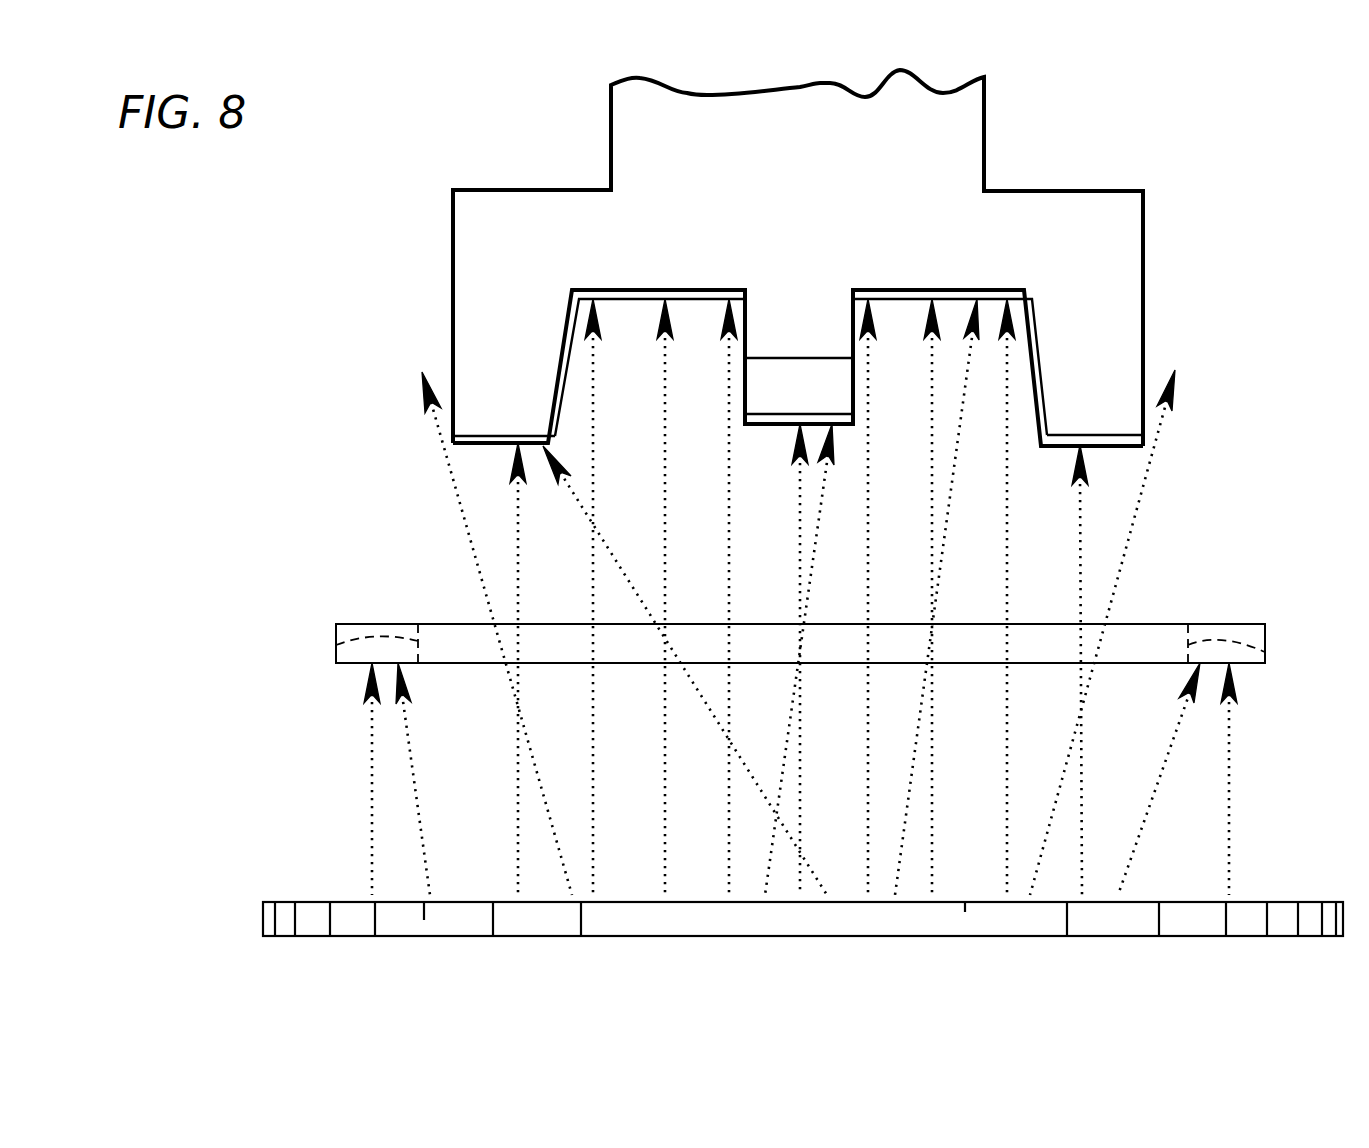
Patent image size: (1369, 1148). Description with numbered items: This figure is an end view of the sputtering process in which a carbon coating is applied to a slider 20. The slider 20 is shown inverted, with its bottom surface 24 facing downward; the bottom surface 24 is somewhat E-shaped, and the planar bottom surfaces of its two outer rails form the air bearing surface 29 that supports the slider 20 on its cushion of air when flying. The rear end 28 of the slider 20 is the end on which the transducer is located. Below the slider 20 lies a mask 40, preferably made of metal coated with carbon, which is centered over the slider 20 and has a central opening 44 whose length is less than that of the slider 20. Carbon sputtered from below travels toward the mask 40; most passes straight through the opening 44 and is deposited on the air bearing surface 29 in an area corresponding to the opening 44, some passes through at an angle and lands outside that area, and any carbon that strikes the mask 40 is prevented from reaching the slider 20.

The slider 20 is at (1088, 143).
The bottom surface 24 is at (612, 270).
The rear end 28 is at (1100, 235).
The air bearing surface 29 is at (496, 433).
The mask 40 is at (1143, 622).
The central opening 44 is at (336, 645).